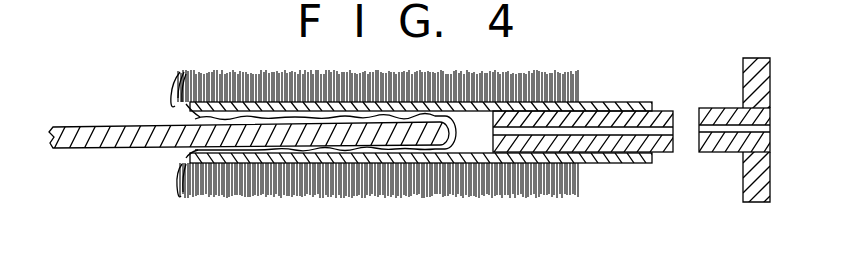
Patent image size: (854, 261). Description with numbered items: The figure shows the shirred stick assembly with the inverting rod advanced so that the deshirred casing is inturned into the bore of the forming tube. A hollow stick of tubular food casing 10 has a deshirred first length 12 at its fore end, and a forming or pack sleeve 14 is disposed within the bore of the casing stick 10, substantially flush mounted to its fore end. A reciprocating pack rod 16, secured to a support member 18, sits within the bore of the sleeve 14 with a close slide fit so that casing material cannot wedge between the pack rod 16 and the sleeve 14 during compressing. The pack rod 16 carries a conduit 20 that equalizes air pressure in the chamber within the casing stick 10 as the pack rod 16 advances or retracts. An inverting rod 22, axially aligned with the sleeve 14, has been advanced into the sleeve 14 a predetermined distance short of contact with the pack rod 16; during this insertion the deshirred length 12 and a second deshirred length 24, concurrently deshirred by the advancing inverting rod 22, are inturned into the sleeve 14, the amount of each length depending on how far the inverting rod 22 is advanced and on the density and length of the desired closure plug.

The casing stick 10 is at (358, 73).
The deshirred first length 12 is at (184, 154).
The forming sleeve 14 is at (467, 105).
The pack rod 16 is at (548, 117).
The support member 18 is at (749, 59).
The conduit 20 is at (608, 130).
The inverting rod 22 is at (89, 127).
The second deshirred length 24 is at (263, 118).